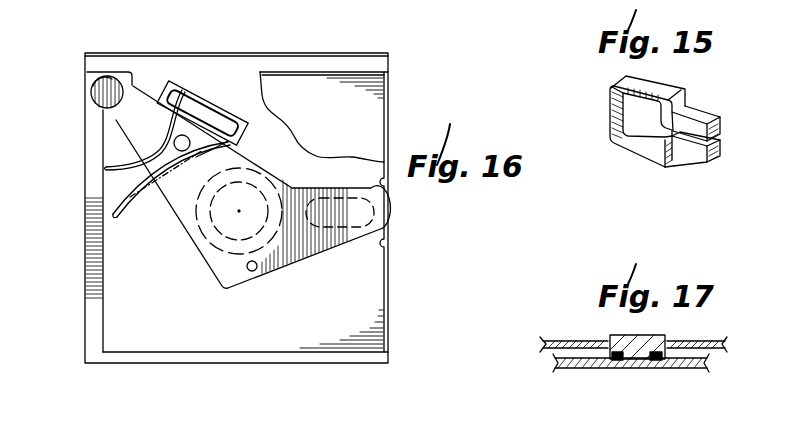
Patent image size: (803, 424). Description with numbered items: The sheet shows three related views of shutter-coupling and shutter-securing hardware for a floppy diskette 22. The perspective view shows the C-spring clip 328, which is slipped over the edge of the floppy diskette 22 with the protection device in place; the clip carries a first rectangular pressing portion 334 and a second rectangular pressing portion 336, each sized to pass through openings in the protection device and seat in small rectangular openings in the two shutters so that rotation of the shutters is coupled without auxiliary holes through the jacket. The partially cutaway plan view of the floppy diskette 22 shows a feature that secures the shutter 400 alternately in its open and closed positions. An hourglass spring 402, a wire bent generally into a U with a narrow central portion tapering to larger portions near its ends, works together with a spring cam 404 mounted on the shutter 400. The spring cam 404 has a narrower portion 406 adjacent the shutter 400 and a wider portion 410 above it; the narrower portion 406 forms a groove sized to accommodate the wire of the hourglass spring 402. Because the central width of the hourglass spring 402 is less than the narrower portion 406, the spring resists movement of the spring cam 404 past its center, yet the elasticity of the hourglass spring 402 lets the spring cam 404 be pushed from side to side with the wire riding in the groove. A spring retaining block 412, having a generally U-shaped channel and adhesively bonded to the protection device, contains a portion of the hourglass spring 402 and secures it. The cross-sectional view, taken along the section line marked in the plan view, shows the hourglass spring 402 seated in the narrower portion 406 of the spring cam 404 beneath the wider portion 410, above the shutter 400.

In FIG. 16, the floppy diskette 22 is at (352, 65).
In FIG. 15, the C-spring clip 328 is at (608, 120).
In FIG. 15, the first rectangular pressing portion 334 is at (690, 124).
In FIG. 15, the second rectangular pressing portion 336 is at (688, 160).
In FIG. 16, the shutter 400 is at (213, 274).
In FIG. 17, the shutter 400 is at (677, 366).
In FIG. 16, the hourglass spring 402 is at (120, 214).
In FIG. 17, the hourglass spring 402 is at (620, 360).
In FIG. 16, the spring cam 404 is at (205, 141).
In FIG. 17, the spring cam 404 is at (641, 352).
In FIG. 16, the narrower portion 406 is at (158, 128).
In FIG. 17, the wider portion 410 is at (620, 335).
In FIG. 16, the spring retaining block 412 is at (210, 96).